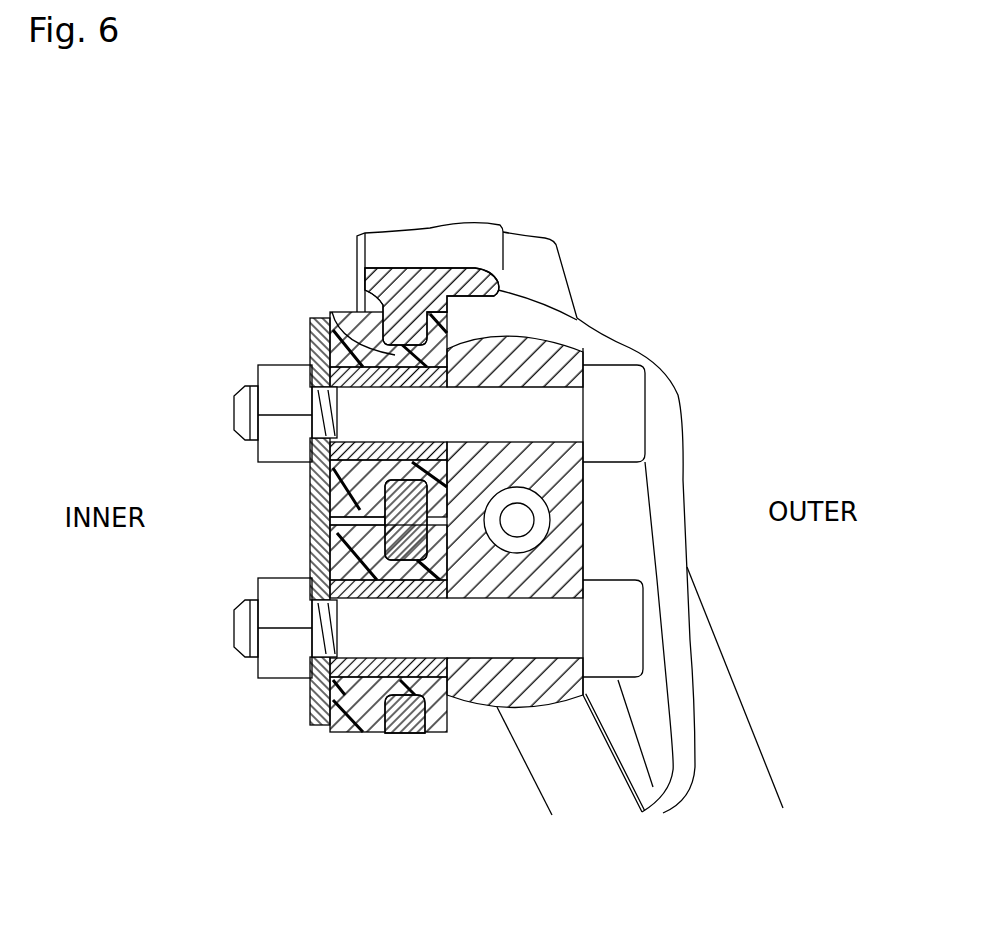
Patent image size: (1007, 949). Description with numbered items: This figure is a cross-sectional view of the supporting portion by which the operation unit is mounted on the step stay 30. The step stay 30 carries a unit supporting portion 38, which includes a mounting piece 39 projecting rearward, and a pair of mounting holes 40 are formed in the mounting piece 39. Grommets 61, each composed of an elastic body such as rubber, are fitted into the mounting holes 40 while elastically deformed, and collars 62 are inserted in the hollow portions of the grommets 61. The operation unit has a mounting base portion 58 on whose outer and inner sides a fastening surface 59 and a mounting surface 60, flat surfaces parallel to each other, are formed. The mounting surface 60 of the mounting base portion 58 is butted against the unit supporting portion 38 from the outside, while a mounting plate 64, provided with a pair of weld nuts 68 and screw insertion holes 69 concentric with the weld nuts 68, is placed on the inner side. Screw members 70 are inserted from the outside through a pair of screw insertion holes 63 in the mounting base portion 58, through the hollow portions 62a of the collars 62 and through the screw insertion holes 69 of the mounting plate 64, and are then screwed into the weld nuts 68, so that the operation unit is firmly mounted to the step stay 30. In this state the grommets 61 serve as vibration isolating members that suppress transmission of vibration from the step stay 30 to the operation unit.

The step stay 30 is at (723, 763).
The unit supporting portion 38 is at (419, 277).
The mounting piece 39 is at (405, 497).
The mounting holes 40 is at (392, 357).
The mounting base portion 58 is at (568, 487).
The fastening surface 59 is at (585, 515).
The mounting surface 60 is at (497, 596).
The grommets 61 is at (318, 487).
The collars 62 is at (335, 358).
The hollow portions 62a is at (340, 423).
The screw insertion holes 63 is at (510, 397).
The mounting plate 64 is at (385, 557).
The weld nuts 68 is at (283, 392).
The screw insertion holes 69 is at (260, 415).
The screw members 70 is at (623, 403).